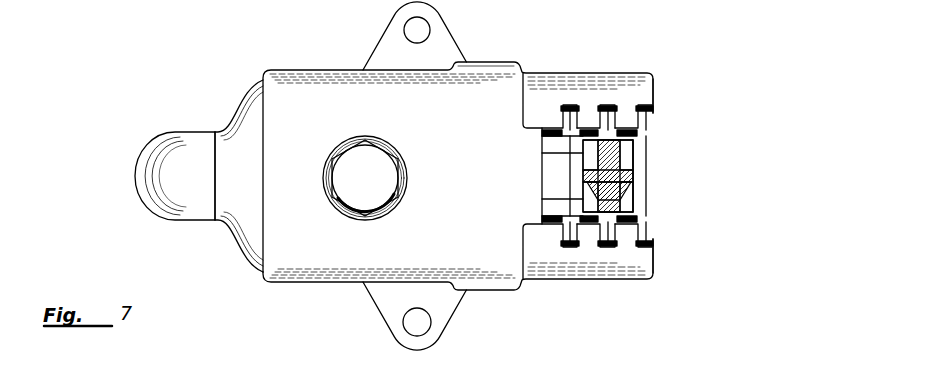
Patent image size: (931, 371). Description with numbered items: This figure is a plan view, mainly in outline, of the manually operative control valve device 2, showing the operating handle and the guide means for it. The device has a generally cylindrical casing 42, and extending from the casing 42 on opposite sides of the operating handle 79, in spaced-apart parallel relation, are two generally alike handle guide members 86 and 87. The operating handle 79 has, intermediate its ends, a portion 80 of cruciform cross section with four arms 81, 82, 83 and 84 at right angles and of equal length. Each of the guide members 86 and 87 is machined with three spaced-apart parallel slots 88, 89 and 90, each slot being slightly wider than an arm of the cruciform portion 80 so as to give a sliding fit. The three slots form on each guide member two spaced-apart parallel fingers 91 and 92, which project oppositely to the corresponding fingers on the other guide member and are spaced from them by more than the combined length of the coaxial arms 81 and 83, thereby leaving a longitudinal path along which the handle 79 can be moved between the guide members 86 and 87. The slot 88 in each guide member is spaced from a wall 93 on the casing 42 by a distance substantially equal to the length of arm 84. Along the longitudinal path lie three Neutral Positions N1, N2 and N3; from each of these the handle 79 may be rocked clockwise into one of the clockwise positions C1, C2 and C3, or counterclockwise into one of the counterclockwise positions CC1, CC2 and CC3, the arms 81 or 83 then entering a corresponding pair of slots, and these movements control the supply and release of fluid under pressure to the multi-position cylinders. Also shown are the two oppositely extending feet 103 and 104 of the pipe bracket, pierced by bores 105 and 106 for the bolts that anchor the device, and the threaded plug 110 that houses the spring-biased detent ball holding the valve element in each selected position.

The manually operative control valve device 2 is at (300, 286).
The casing 42 is at (488, 72).
The operating handle 79 is at (598, 165).
The cruciform portion 80 is at (640, 180).
The arm 81 is at (605, 145).
The arm 82 is at (622, 165).
The arm 83 is at (640, 198).
The arm 84 is at (640, 208).
The handle guide member 86 is at (656, 77).
The handle guide member 87 is at (655, 274).
The slot 88 is at (565, 106).
The slot 89 is at (605, 113).
The slot 90 is at (640, 113).
The finger 91 is at (590, 113).
The finger 92 is at (628, 113).
The wall 93 is at (545, 192).
The foot 103 is at (381, 36).
The foot 104 is at (386, 318).
The bore 105 is at (425, 32).
The bore 106 is at (423, 322).
The threaded plug 110 is at (378, 182).
The Neutral Position N1 is at (640, 171).
The Neutral Position N2 is at (572, 183).
The Neutral Position N3 is at (640, 183).
The clockwise position C1 is at (608, 105).
The clockwise position C2 is at (570, 105).
The clockwise position C3 is at (645, 105).
The counterclockwise position CC1 is at (608, 248).
The counterclockwise position CC2 is at (570, 248).
The counterclockwise position CC3 is at (646, 248).